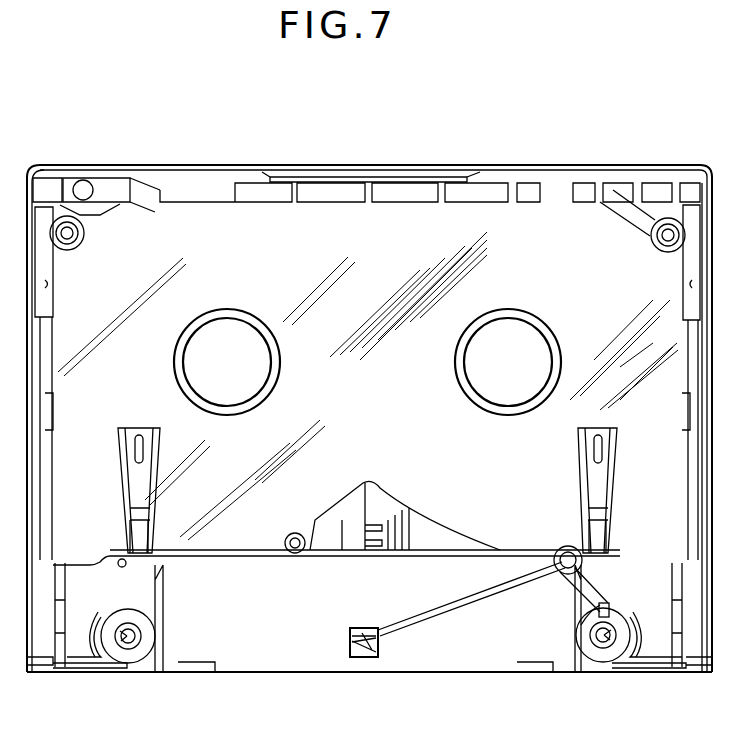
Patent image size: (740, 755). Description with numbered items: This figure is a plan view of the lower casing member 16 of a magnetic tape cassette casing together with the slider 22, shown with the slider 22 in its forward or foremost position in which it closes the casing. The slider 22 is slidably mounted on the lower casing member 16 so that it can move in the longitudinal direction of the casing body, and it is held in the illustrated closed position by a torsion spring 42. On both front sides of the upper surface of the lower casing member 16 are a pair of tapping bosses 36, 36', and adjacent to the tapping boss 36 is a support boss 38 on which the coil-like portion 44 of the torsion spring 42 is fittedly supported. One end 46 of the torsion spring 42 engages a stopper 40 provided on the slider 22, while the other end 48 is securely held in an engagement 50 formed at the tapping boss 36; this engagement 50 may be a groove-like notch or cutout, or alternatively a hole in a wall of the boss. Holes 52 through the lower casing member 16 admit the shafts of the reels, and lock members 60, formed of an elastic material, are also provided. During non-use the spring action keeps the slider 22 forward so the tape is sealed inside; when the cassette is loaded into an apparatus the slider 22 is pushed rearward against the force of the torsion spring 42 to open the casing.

The lower casing member 16 is at (190, 200).
The slider 22 is at (262, 665).
The tapping boss 36 is at (629, 664).
The tapping boss 36' is at (126, 664).
The support boss 38 is at (560, 548).
The stopper 40 is at (370, 657).
The torsion spring 42 is at (440, 607).
The coil-like portion 44 is at (578, 567).
The one end of the torsion spring 46 is at (350, 645).
The other end of the torsion spring 48 is at (609, 607).
The engagement 50 is at (580, 628).
The hole 52 is at (485, 360).
The lock member 60 is at (592, 468).